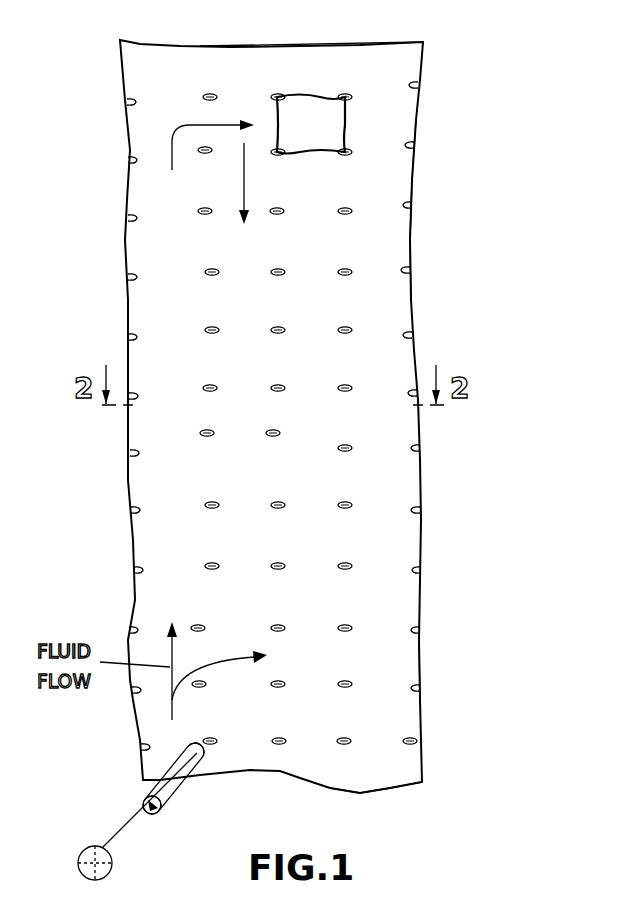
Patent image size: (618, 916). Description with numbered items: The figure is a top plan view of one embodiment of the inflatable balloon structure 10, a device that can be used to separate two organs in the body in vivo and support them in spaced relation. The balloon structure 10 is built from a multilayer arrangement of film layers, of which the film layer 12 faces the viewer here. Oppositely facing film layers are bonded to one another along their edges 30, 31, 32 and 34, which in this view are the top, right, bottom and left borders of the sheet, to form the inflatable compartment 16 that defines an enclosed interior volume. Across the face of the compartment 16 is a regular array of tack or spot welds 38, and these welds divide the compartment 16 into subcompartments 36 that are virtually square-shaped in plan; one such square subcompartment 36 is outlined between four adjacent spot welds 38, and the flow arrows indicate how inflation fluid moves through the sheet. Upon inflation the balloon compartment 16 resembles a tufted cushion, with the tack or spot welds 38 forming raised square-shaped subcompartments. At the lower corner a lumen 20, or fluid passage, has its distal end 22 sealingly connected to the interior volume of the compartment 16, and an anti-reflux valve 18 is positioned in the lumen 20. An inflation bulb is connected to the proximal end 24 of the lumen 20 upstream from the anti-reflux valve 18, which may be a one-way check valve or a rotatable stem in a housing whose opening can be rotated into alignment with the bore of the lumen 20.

The balloon structure 10 is at (515, 265).
The film layer 12 is at (388, 472).
The inflatable compartment 16 is at (388, 590).
The anti-reflux valve 18 is at (78, 868).
The lumen 20 is at (178, 785).
The distal end 22 is at (190, 752).
The proximal end 24 is at (155, 812).
The edge 30 is at (372, 42).
The edge 31 is at (412, 245).
The edge 32 is at (392, 793).
The edge 34 is at (128, 445).
The subcompartment 36 is at (318, 129).
The tack or spot weld 38 is at (349, 210).